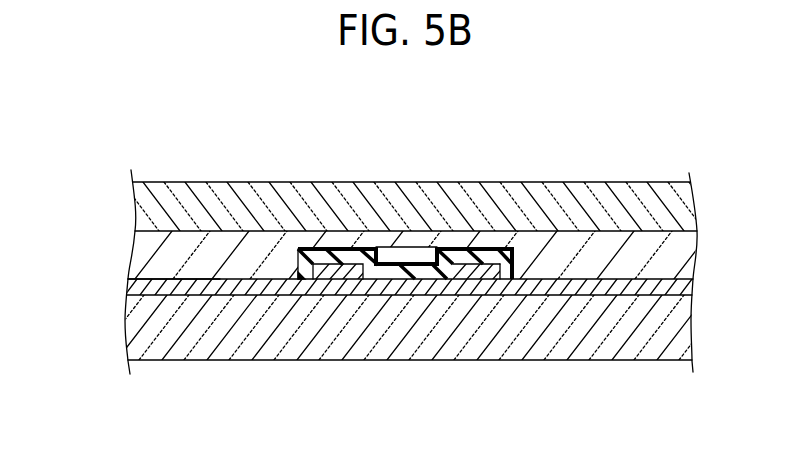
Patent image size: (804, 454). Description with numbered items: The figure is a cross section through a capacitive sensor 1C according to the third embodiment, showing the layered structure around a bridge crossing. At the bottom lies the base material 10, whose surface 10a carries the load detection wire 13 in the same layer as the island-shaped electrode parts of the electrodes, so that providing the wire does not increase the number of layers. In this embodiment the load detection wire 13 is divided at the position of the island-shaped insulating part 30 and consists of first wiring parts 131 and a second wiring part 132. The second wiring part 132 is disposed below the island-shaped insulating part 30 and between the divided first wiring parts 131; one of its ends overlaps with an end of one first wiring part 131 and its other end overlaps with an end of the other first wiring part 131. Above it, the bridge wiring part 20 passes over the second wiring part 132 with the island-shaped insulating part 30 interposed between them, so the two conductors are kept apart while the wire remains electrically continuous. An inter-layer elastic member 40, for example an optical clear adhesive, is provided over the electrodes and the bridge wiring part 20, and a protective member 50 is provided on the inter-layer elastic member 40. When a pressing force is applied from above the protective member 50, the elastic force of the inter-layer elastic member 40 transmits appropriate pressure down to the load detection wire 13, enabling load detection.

The capacitive sensor 1C is at (654, 124).
The base material 10 is at (677, 338).
The surface of the base material 10a is at (128, 280).
The load detection wire 13 is at (416, 266).
The first wiring parts 131 is at (225, 290).
The second wiring part 132 is at (410, 283).
The bridge wiring part 20 is at (417, 250).
The island-shaped insulating part 30 is at (462, 255).
The inter-layer elastic member 40 is at (677, 250).
The protective member 50 is at (677, 203).